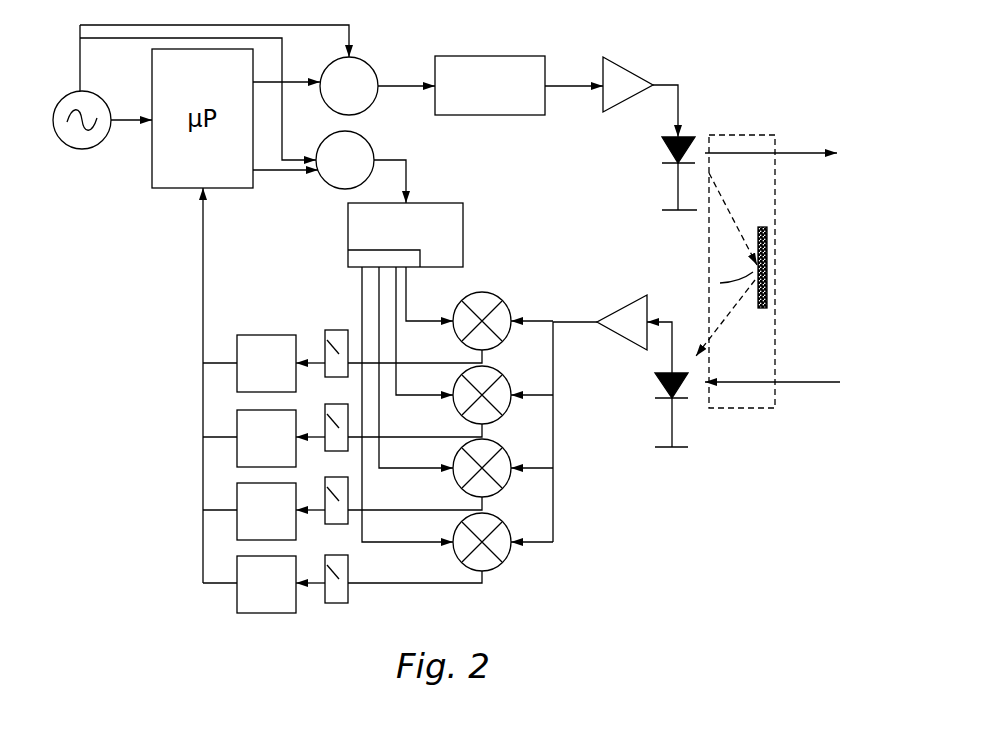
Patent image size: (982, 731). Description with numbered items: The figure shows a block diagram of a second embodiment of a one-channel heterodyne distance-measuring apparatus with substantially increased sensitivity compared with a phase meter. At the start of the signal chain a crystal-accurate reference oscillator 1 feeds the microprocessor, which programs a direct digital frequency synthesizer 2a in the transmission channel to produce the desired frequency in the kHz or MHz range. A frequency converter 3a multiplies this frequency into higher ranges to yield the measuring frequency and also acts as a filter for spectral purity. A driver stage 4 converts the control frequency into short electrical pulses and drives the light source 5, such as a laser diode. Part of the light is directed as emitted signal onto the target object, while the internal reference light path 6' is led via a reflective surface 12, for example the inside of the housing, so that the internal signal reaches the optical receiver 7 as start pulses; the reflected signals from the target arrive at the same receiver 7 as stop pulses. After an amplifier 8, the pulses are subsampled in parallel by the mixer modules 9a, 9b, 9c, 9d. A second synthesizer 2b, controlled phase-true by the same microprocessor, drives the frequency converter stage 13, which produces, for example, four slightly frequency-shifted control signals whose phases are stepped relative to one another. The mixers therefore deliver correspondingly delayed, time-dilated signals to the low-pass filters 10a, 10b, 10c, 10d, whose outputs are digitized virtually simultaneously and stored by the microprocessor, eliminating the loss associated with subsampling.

The reference oscillator 1 is at (74, 136).
The direct digital frequency synthesizer 2a is at (377, 86).
The direct digital frequency synthesizer 2b is at (361, 167).
The frequency converter 3a is at (519, 85).
The driver stage 4 is at (617, 83).
The light source 5 is at (677, 165).
The internal reference light path 6' is at (768, 249).
The optical receiver 7 is at (673, 397).
The amplifier 8 is at (628, 318).
The mixer module 9a is at (482, 303).
The mixer module 9b is at (482, 383).
The mixer module 9c is at (482, 462).
The mixer module 9d is at (482, 525).
The low-pass filter 10a is at (327, 341).
The low-pass filter 10b is at (327, 415).
The low-pass filter 10c is at (327, 489).
The low-pass filter 10d is at (327, 566).
The reflective surface 12 is at (670, 324).
The frequency converter stage 13 is at (405, 372).